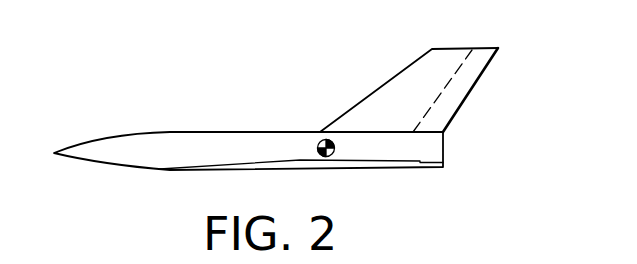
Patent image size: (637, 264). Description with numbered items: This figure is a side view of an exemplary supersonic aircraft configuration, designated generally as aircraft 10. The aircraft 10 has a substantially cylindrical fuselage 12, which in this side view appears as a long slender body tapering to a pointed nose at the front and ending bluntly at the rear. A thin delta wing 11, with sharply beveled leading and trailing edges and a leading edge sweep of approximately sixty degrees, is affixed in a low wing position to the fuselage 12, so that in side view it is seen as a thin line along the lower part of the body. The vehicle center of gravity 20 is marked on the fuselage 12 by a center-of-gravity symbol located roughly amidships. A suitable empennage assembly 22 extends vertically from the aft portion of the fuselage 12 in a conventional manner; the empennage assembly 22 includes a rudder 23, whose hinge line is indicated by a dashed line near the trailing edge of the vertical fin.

The supersonic aircraft 10 is at (112, 107).
The delta wing 11 is at (323, 168).
The fuselage 12 is at (181, 131).
The vehicle center of gravity 20 is at (317, 148).
The empennage assembly 22 is at (375, 91).
The rudder 23 is at (467, 95).